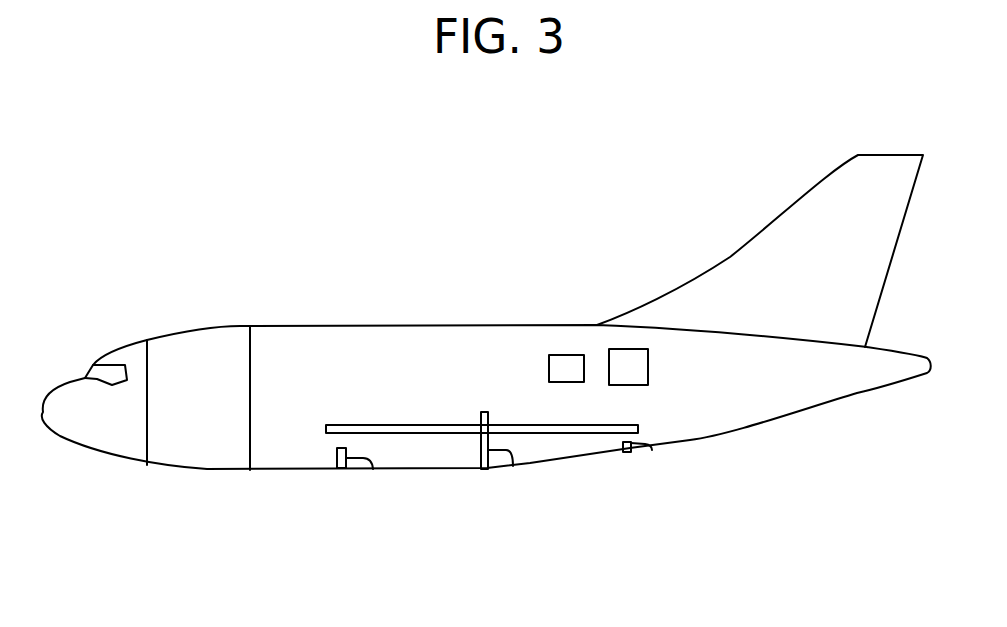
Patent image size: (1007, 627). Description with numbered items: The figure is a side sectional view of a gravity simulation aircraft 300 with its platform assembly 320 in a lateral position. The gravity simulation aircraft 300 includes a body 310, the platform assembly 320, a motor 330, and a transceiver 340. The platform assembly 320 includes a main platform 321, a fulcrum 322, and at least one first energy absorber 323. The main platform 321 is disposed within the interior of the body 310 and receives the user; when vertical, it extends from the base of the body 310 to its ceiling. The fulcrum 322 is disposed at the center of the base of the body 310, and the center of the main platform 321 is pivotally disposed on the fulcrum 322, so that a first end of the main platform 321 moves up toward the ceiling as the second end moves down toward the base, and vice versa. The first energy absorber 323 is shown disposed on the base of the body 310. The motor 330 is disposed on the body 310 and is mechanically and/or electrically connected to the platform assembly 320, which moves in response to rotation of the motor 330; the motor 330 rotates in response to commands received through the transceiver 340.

The gravity simulation aircraft 300 is at (486, 360).
The body 310 is at (492, 319).
The platform assembly 320 is at (482, 314).
The main platform 321 is at (528, 424).
The fulcrum 322 is at (513, 467).
The first energy absorber 323 is at (373, 470).
The motor 330 is at (567, 355).
The transceiver 340 is at (627, 349).